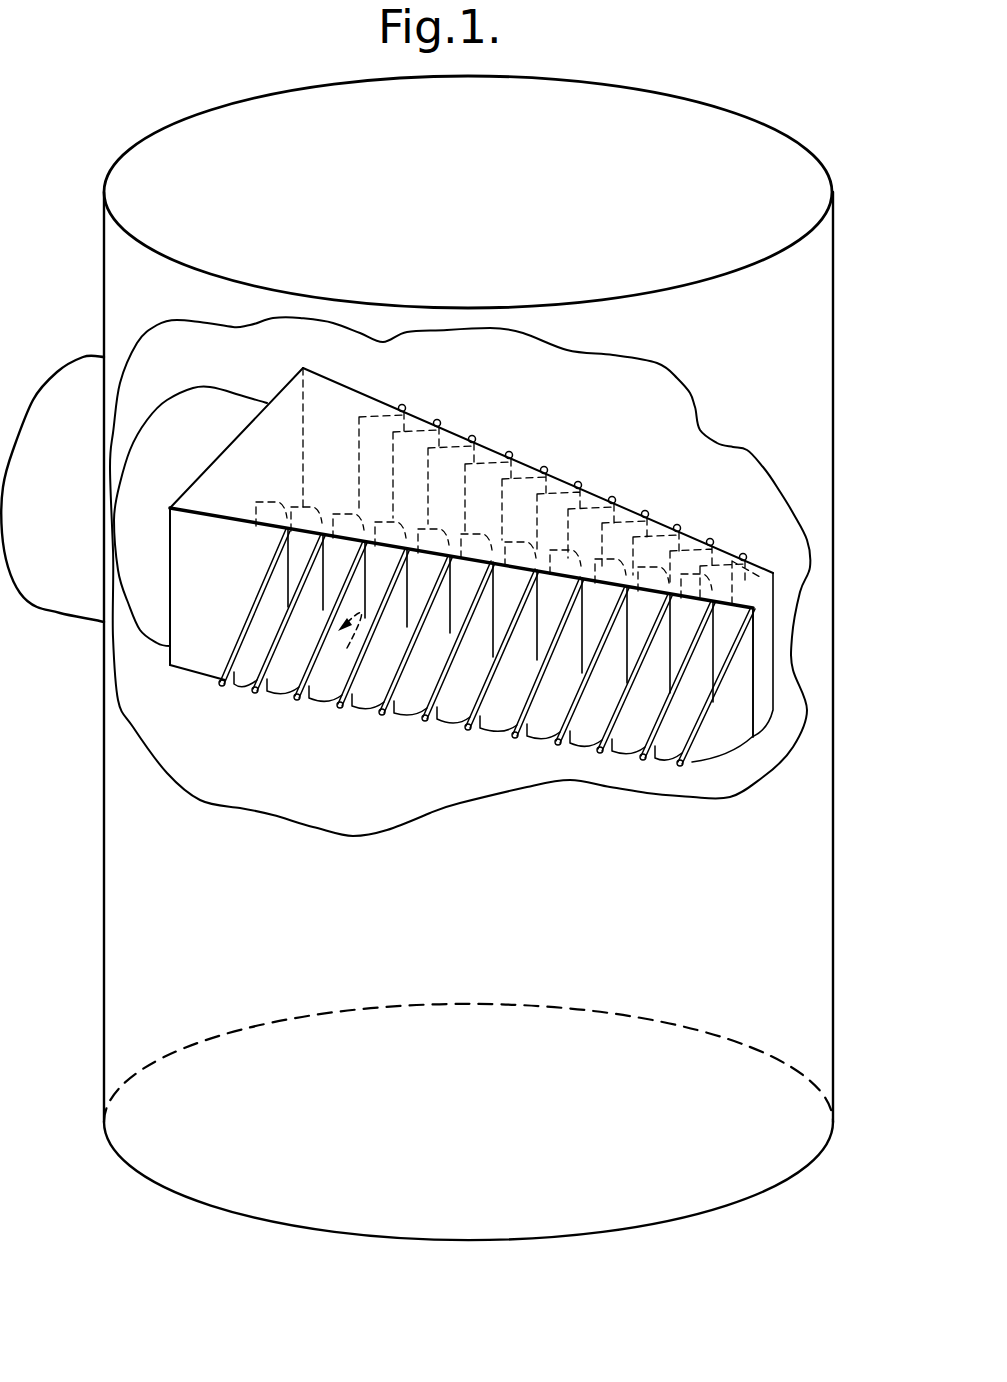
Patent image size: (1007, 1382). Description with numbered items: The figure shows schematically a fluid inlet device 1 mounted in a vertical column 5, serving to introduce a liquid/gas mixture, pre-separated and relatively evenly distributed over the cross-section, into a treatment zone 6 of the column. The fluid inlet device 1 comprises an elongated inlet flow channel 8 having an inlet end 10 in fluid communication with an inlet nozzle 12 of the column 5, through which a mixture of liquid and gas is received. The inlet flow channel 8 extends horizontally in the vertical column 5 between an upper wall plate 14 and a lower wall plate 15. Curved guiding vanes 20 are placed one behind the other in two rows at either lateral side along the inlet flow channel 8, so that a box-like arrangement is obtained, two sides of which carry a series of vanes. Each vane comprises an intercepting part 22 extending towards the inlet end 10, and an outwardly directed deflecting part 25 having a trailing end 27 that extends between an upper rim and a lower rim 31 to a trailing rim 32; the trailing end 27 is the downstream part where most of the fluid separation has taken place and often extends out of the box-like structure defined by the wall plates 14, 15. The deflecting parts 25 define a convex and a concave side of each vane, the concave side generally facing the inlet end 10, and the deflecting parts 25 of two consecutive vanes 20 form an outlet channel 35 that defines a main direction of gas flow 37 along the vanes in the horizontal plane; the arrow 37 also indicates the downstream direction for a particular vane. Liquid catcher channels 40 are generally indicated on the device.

The fluid inlet device 1 is at (290, 367).
The vertical column 5 is at (833, 923).
The treatment zone 6 is at (738, 493).
The inlet flow channel 8 is at (323, 393).
The inlet end 10 is at (160, 645).
The inlet nozzle 12 is at (68, 615).
The upper wall plate 14 is at (187, 514).
The lower wall plate 15 is at (188, 668).
The curved guiding vanes 20 is at (705, 540).
The intercepting part 22 is at (338, 458).
The deflecting part 25 is at (282, 675).
The trailing end 27 is at (247, 670).
The lower rim 31 is at (238, 702).
The trailing rim 32 is at (233, 688).
The outlet channel 35 is at (487, 443).
The main direction of gas flow 37 is at (341, 646).
The liquid catcher channels 40 is at (598, 753).